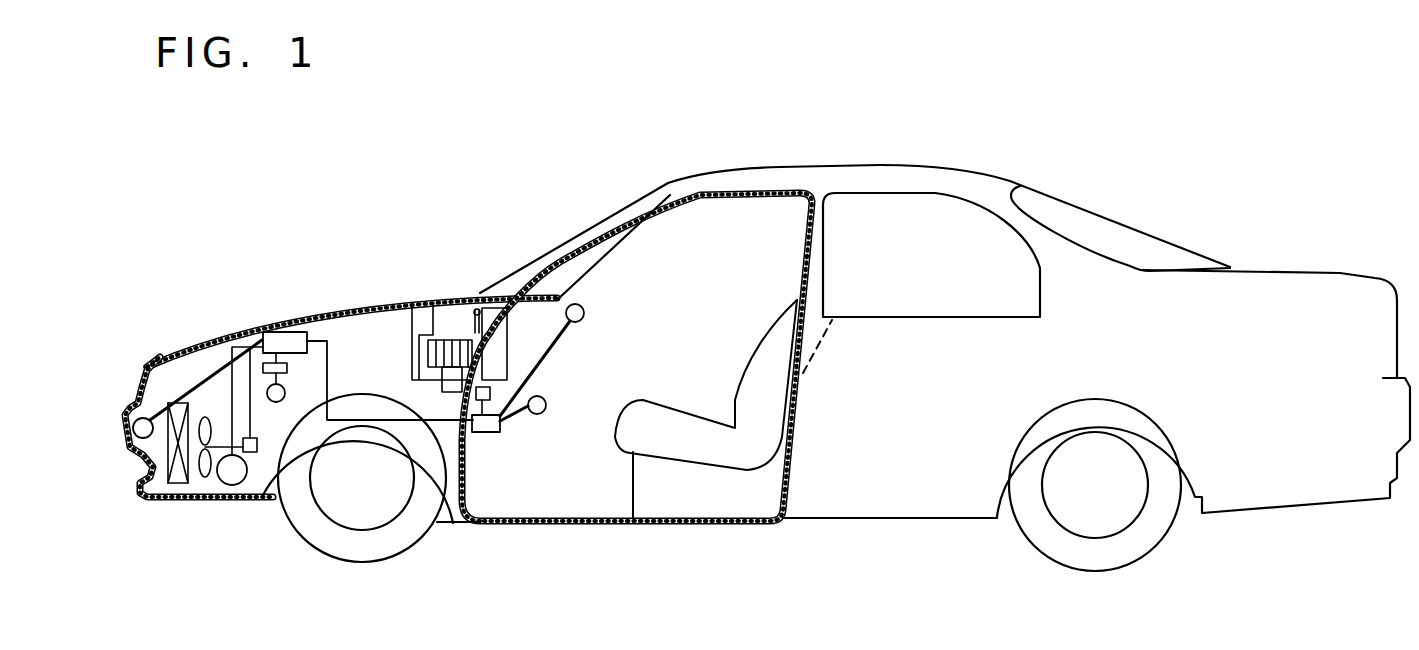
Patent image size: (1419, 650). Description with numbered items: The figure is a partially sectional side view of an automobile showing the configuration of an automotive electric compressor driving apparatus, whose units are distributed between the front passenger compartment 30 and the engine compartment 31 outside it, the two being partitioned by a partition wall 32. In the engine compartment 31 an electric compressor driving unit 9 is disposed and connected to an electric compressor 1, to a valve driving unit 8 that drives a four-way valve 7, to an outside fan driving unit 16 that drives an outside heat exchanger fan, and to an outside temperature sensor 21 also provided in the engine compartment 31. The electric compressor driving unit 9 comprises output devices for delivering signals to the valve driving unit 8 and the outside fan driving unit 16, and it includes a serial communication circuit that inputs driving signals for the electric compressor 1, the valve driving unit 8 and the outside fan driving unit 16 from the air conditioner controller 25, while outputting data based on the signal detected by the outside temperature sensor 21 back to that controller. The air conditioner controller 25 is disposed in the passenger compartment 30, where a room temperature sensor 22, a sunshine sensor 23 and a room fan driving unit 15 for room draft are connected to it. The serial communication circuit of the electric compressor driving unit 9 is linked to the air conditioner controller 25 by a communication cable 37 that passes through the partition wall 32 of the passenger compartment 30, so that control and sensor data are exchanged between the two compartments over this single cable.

The electric compressor 1 is at (228, 483).
The four-way valve 7 is at (286, 390).
The valve driving unit 8 is at (248, 340).
The electric compressor driving unit 9 is at (287, 337).
The room fan driving unit 15 is at (503, 310).
The outside fan driving unit 16 is at (268, 500).
The outside temperature sensor 21 is at (137, 395).
The room temperature sensor 22 is at (550, 418).
The sunshine sensor 23 is at (574, 304).
The air conditioner controller 25 is at (484, 432).
The passenger compartment 30 is at (532, 455).
The engine compartment 31 is at (202, 390).
The partition wall 32 is at (458, 500).
The communication cable 37 is at (390, 423).